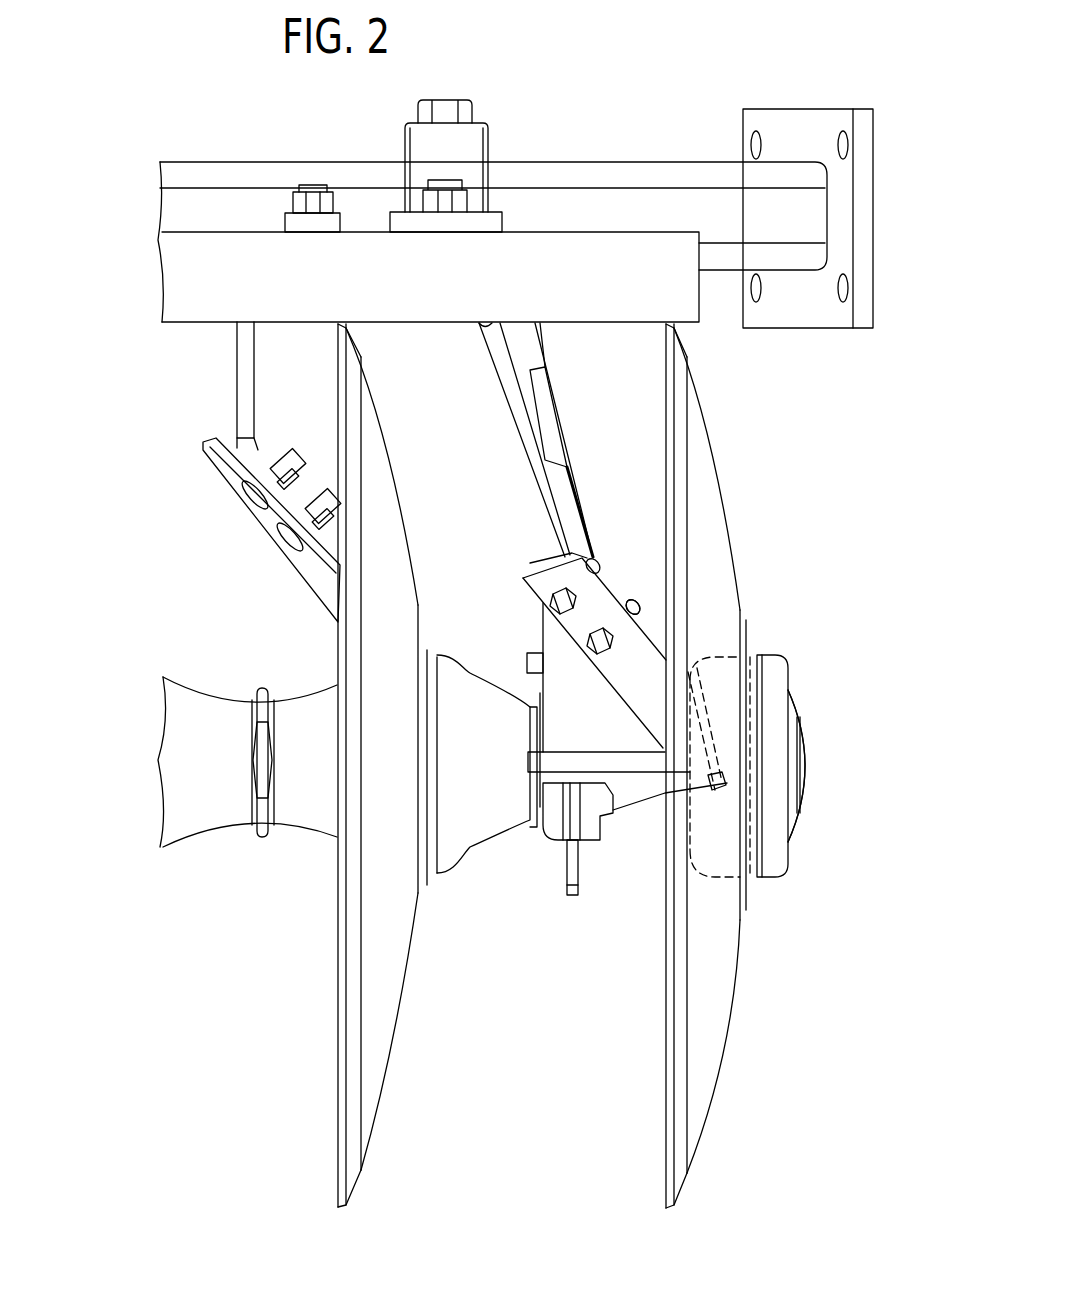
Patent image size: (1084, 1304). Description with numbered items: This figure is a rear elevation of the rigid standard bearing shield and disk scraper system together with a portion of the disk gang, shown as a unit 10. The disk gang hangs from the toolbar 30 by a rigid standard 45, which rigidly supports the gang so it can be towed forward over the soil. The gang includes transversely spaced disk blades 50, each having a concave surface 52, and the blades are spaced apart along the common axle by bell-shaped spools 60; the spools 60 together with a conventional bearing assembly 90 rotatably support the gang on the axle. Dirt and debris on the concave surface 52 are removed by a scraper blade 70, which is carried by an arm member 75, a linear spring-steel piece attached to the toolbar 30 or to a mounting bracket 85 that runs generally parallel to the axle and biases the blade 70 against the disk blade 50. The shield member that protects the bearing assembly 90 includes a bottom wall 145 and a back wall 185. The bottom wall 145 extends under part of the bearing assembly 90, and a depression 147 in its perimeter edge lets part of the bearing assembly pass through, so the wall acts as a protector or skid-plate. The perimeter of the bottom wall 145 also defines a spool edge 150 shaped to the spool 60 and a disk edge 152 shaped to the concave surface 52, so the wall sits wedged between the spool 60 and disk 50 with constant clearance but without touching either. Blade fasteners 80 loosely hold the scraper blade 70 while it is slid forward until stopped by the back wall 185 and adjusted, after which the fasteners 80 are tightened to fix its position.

The row unit assembly 10 is at (603, 580).
The toolbar 30 is at (548, 172).
The rigid standard 45 is at (497, 350).
The disk blade 50 is at (338, 928).
The concave surface 52 is at (675, 1062).
The spool 60 is at (850, 878).
The scraper blade 70 is at (232, 478).
The arm member 75 is at (243, 376).
The blade fastener 80 is at (637, 605).
The mounting bracket 85 is at (430, 277).
The bearing assembly 90 is at (540, 832).
The bottom wall 145 is at (640, 800).
The depression 147 is at (572, 850).
The spool edge 150 is at (745, 880).
The disk edge 152 is at (765, 735).
The back wall 185 is at (565, 652).